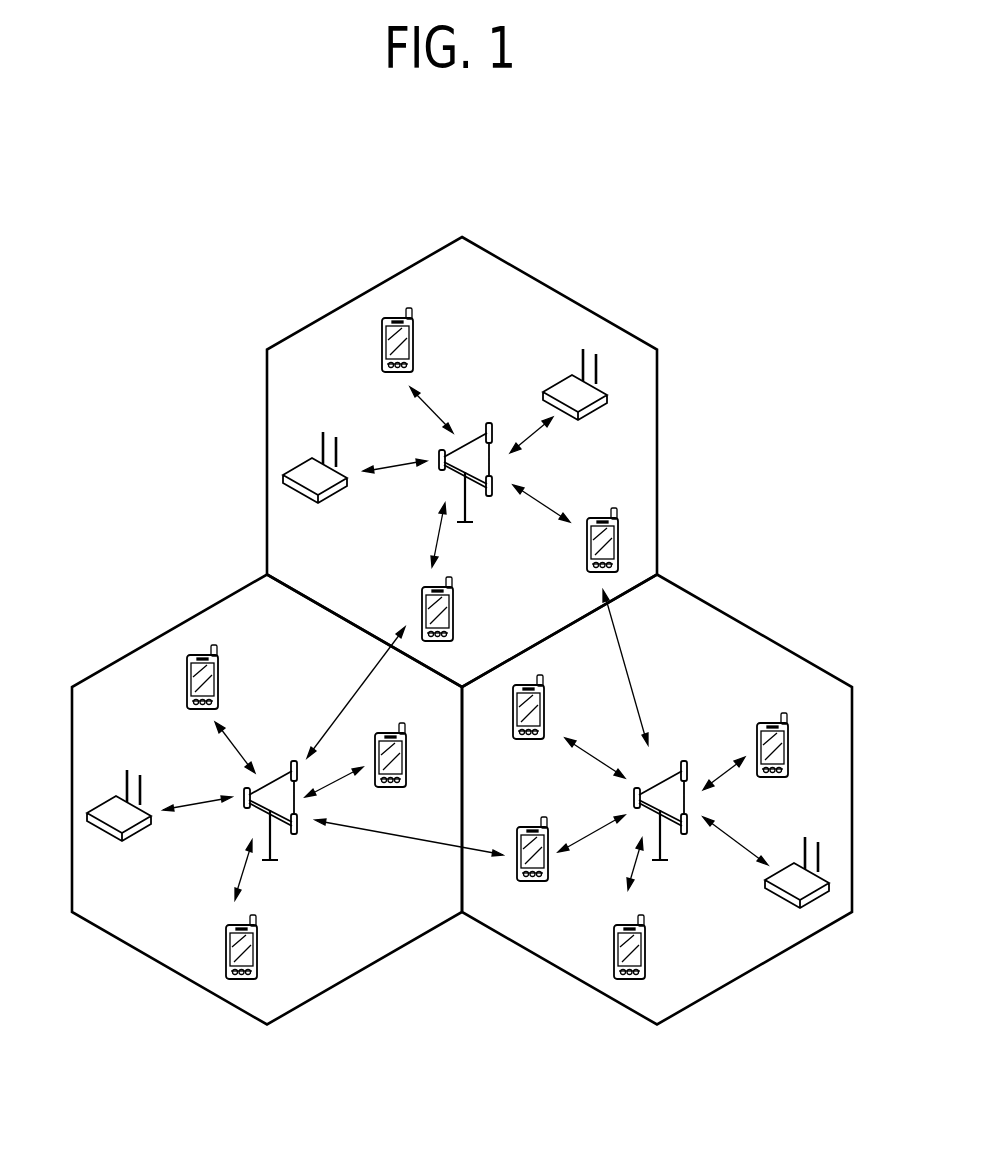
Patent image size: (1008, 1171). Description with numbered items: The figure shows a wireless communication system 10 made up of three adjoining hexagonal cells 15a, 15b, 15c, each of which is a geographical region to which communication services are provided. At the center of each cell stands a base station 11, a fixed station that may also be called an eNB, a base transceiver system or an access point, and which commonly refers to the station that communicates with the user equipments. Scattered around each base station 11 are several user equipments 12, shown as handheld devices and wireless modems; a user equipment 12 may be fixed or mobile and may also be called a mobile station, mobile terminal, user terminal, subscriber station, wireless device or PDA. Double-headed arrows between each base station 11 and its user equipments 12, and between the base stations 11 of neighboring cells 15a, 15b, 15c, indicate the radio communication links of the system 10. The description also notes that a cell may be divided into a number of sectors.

The wireless communication system 10 is at (740, 357).
The base station 11 is at (476, 440).
The user equipment 12 is at (413, 340).
The cell 15a is at (657, 450).
The cell 15b is at (782, 645).
The cell 15c is at (145, 643).